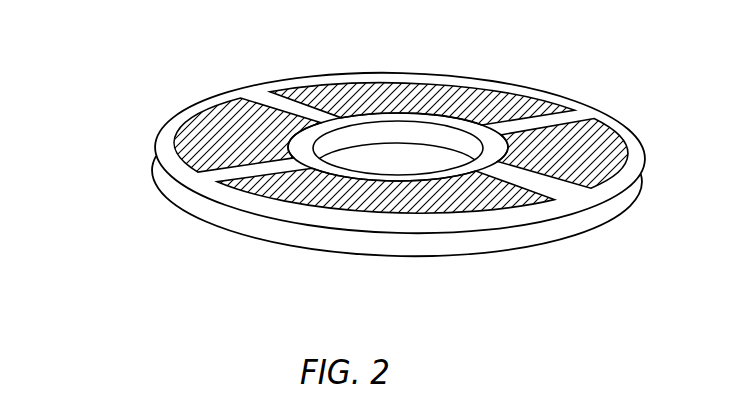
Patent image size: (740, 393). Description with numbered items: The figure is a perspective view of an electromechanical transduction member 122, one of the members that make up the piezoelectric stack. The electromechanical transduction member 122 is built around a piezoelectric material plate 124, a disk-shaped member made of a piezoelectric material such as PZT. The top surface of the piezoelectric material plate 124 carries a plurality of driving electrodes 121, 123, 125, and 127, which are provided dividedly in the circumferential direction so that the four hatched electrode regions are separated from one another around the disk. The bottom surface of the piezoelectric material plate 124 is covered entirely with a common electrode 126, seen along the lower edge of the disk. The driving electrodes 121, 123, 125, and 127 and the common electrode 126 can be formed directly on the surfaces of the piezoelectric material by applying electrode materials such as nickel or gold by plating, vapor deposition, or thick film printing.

The electromechanical transduction member 122 is at (90, 33).
The driving electrode 121 is at (200, 130).
The driving electrode 123 is at (532, 100).
The driving electrode 125 is at (610, 140).
The driving electrode 127 is at (211, 185).
The piezoelectric material plate 124 is at (155, 170).
The common electrode 126 is at (352, 257).